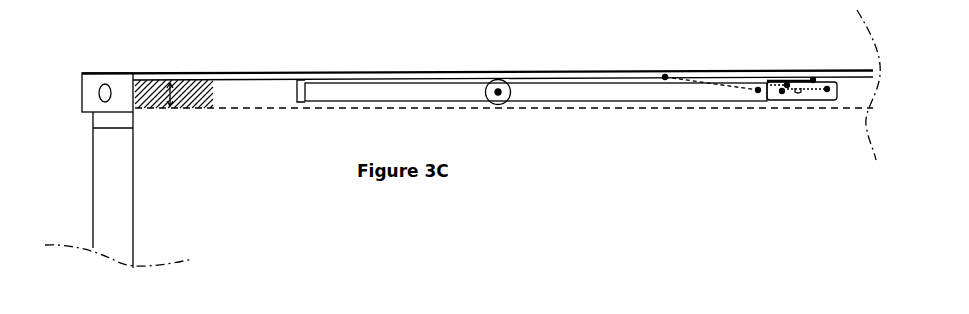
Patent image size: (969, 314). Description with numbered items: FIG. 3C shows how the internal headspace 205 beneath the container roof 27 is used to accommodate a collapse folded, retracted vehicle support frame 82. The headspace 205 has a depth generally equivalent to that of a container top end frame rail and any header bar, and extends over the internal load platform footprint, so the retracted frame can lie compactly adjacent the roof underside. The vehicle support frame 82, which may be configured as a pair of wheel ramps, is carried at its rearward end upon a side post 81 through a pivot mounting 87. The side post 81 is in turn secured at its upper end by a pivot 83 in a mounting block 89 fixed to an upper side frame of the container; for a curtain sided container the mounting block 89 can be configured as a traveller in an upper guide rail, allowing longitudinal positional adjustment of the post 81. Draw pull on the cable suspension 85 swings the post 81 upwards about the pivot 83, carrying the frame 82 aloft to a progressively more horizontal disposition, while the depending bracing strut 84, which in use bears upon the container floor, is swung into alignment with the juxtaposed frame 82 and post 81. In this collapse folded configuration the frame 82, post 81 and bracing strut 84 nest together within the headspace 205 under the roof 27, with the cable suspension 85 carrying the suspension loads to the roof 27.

The roof 27 is at (231, 72).
The internal headspace 205 is at (150, 107).
The mounting block 89 is at (298, 90).
The pivot 83 is at (347, 84).
The side post 81 is at (432, 91).
The pivot mounting 87 is at (498, 92).
The vehicle support frame 82 is at (723, 70).
The cable suspension 85 is at (760, 70).
The bracing strut 84 is at (807, 70).